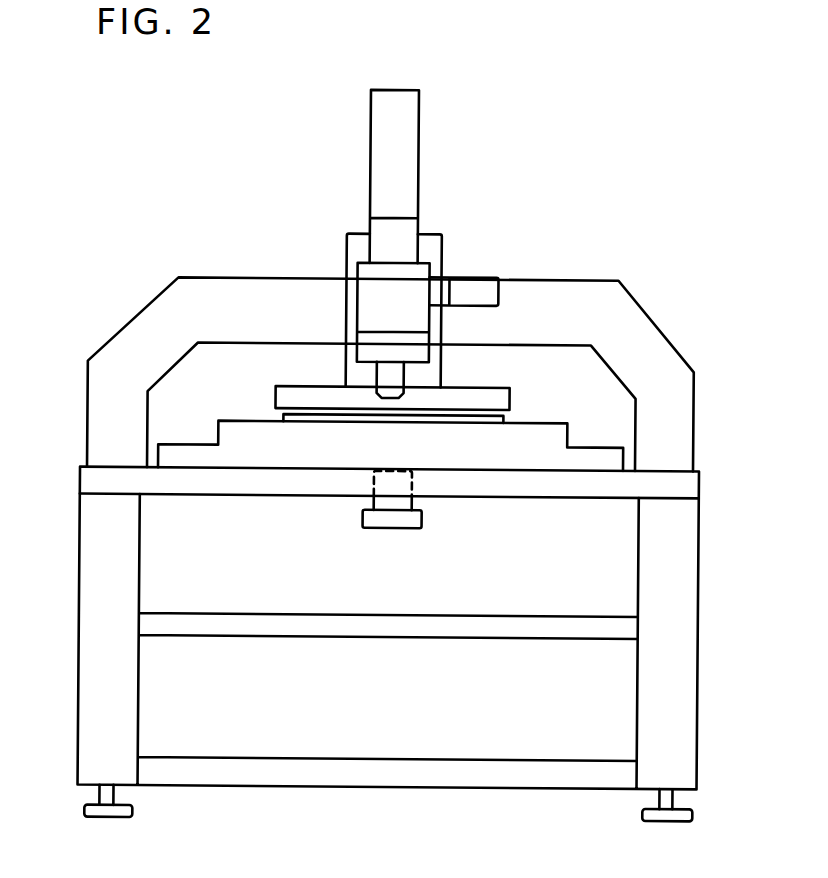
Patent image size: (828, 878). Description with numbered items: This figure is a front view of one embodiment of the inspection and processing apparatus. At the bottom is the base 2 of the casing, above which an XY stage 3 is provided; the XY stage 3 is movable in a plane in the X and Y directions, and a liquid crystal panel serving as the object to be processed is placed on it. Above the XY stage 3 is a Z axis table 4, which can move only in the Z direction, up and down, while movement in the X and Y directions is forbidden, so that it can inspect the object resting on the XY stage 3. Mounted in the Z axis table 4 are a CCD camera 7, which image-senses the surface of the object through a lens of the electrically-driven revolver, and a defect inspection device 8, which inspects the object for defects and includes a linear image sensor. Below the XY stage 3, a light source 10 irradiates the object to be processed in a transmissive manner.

The base 2 is at (672, 487).
The XY stage 3 is at (548, 433).
The Z axis table 4 is at (352, 303).
The CCD camera 7 is at (470, 286).
The defect inspection device 8 is at (285, 395).
The light source 10 is at (382, 520).